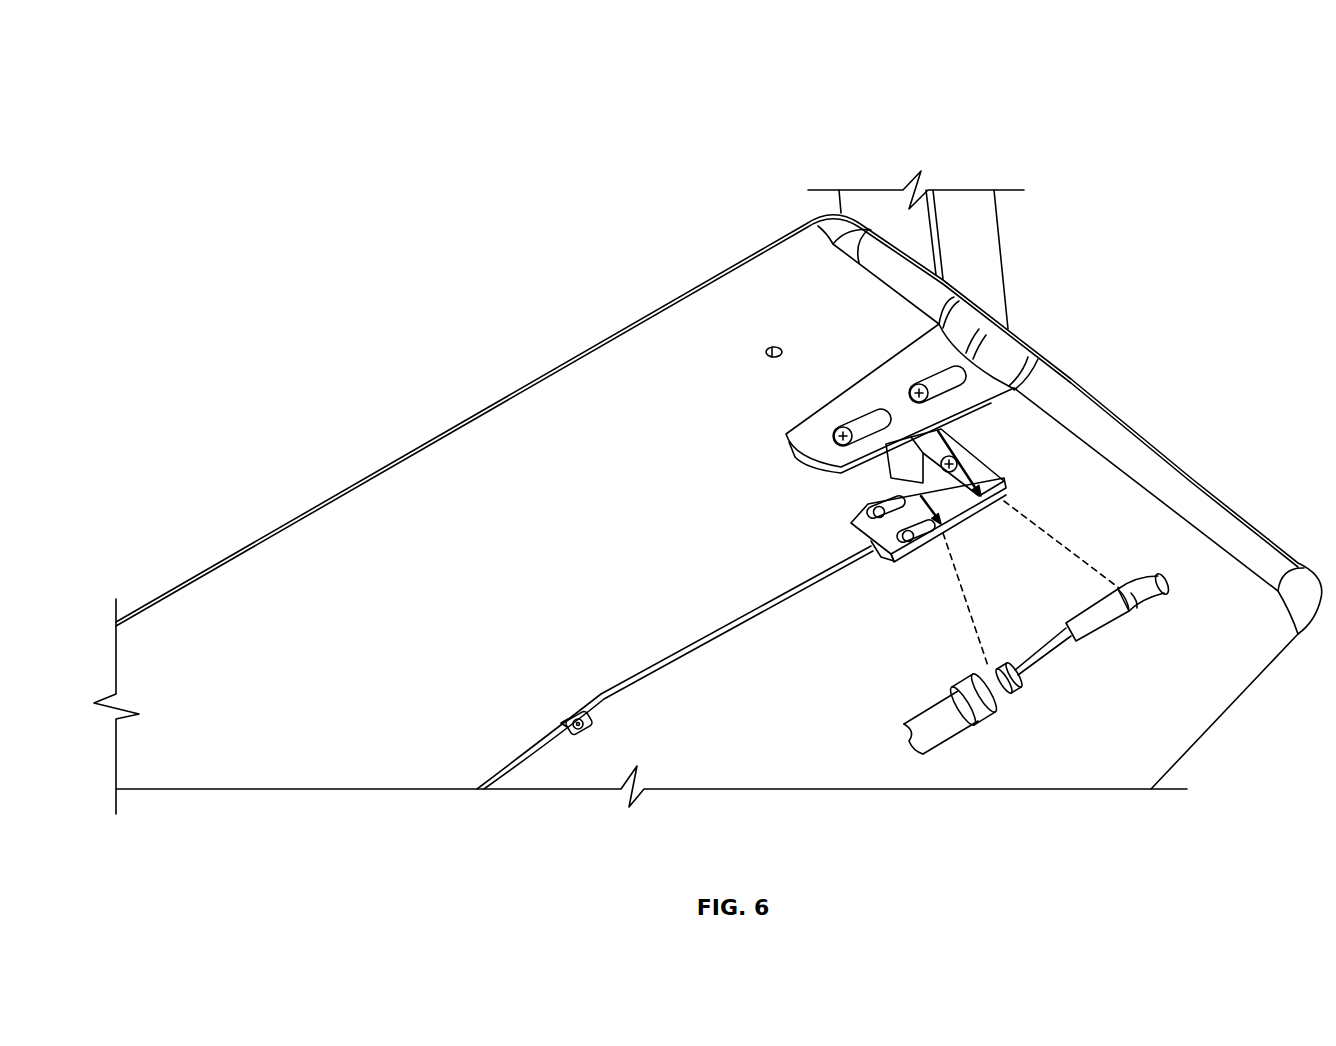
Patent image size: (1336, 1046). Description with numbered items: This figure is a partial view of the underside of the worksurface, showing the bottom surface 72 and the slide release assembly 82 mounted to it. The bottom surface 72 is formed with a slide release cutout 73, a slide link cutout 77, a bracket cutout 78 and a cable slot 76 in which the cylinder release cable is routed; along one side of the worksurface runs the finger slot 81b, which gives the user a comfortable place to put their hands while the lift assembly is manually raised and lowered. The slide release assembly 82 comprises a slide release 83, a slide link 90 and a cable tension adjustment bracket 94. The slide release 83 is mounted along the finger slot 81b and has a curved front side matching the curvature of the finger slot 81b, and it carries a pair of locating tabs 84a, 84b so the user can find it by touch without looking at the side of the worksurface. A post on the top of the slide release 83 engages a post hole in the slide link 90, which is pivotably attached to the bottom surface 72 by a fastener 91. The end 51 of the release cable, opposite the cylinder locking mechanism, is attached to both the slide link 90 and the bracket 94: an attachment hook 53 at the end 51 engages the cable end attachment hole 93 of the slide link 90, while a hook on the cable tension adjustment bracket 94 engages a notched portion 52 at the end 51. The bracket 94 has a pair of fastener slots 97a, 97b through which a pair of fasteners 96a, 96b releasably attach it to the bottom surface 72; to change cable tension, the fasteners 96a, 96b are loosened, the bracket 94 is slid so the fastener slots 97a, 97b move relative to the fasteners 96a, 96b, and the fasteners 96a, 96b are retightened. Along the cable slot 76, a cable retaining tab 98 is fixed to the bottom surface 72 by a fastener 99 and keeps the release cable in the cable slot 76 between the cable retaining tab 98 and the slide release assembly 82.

The slide release assembly 82 is at (1115, 112).
The finger slot 81b is at (1113, 440).
The locating tab 84a is at (1005, 323).
The locating tab 84b is at (1013, 343).
The slide release 83 is at (1028, 349).
The slide release cutout 73 is at (800, 452).
The slide link cutout 77 is at (907, 462).
The slide link 90 is at (955, 440).
The fastener 91 is at (976, 460).
The cable end attachment hole 93 is at (1007, 483).
The cable tension adjustment bracket 94 is at (988, 497).
The fastener slot 97a is at (948, 522).
The fastener slot 97b is at (936, 542).
The fastener 96a is at (875, 508).
The fastener 96b is at (906, 550).
The bracket cutout 78 is at (884, 560).
The cable slot 76 is at (658, 660).
The cable retaining tab 98 is at (566, 712).
The fastener 99 is at (577, 713).
The end of release cable 51 is at (1135, 625).
The notched portion 52 is at (1003, 698).
The attachment hook 53 is at (1131, 588).
The bottom surface 72 is at (400, 752).